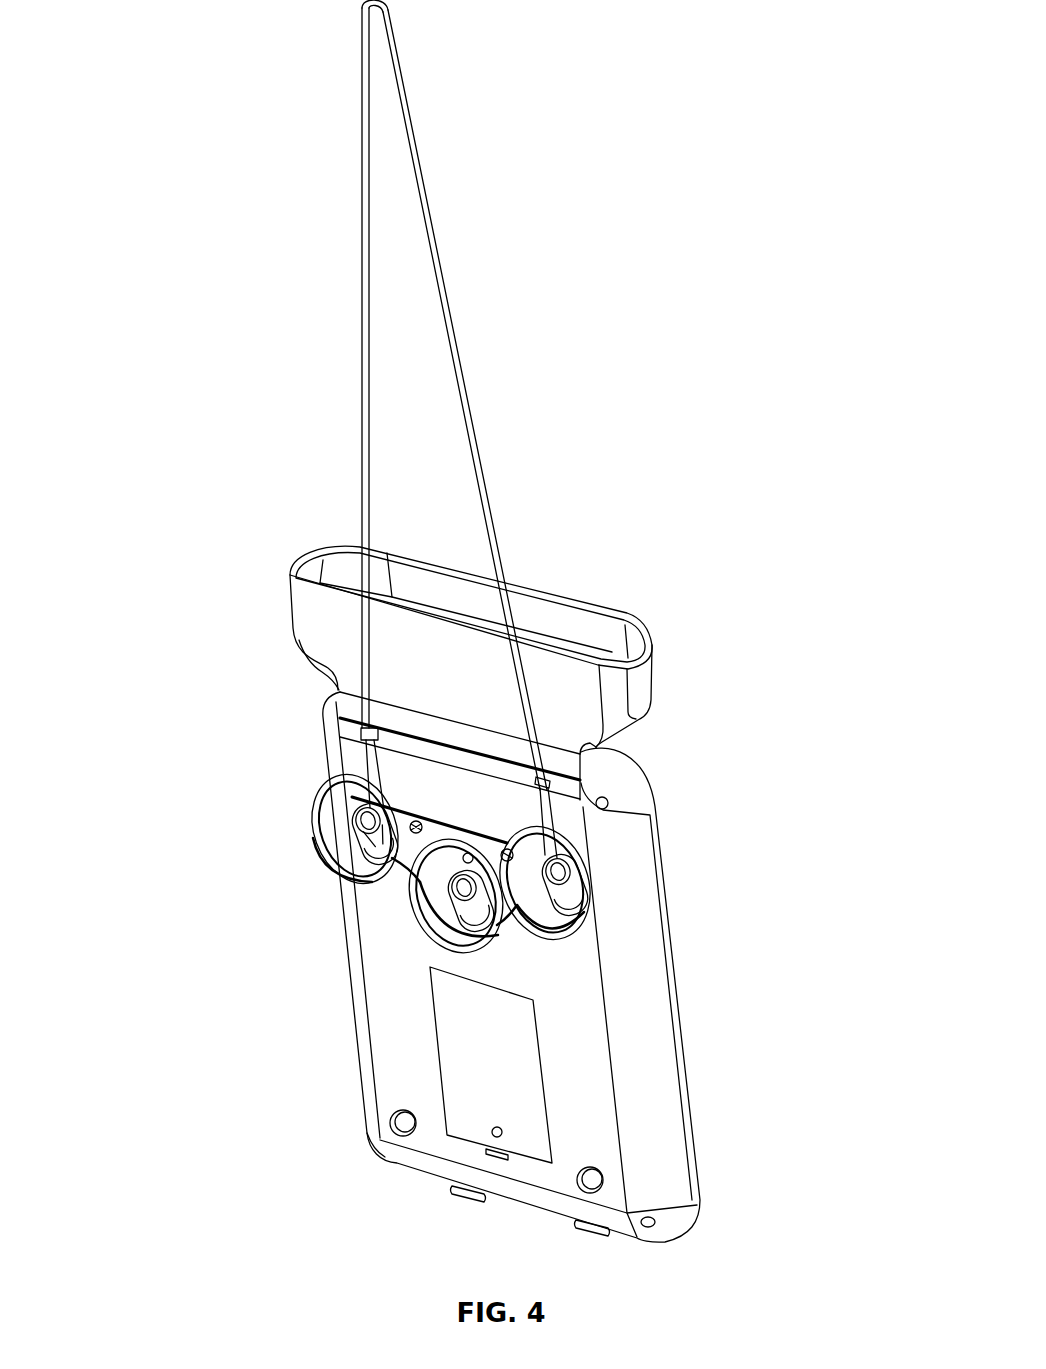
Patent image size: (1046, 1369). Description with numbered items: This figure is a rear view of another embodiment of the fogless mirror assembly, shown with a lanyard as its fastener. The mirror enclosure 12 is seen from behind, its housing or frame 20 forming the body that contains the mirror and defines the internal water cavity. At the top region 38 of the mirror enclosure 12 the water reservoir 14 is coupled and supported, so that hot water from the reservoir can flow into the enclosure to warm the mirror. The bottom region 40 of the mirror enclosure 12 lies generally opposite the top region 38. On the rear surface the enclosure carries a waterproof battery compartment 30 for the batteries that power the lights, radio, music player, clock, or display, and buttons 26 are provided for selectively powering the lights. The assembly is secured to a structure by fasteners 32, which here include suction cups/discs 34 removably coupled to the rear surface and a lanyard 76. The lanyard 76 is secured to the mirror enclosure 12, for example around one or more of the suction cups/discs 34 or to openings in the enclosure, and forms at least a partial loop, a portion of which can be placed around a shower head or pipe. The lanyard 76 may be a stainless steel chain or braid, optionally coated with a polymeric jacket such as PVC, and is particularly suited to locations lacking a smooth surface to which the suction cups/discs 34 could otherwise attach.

The mirror enclosure 12 is at (256, 822).
The water reservoir 14 is at (309, 522).
The frame 20 is at (663, 890).
The buttons 26 is at (468, 1200).
The waterproof battery compartment 30 is at (544, 1055).
The fastener 32 is at (470, 258).
The suction cups/discs 34 is at (350, 848).
The top region 38 is at (274, 691).
The bottom region 40 is at (338, 1185).
The lanyard 76 is at (468, 390).